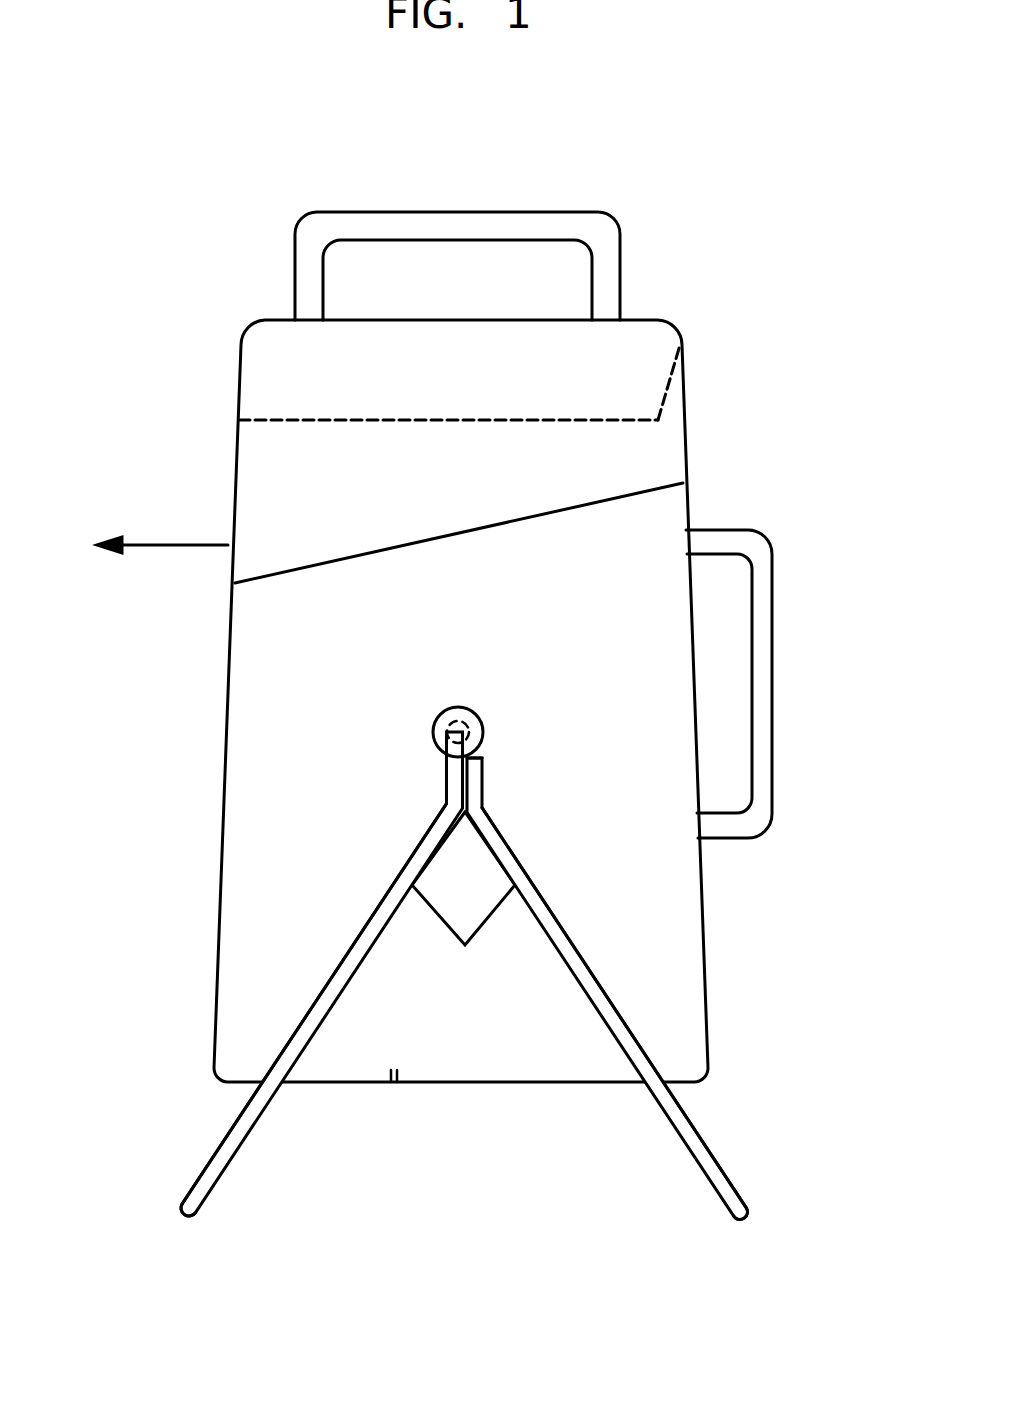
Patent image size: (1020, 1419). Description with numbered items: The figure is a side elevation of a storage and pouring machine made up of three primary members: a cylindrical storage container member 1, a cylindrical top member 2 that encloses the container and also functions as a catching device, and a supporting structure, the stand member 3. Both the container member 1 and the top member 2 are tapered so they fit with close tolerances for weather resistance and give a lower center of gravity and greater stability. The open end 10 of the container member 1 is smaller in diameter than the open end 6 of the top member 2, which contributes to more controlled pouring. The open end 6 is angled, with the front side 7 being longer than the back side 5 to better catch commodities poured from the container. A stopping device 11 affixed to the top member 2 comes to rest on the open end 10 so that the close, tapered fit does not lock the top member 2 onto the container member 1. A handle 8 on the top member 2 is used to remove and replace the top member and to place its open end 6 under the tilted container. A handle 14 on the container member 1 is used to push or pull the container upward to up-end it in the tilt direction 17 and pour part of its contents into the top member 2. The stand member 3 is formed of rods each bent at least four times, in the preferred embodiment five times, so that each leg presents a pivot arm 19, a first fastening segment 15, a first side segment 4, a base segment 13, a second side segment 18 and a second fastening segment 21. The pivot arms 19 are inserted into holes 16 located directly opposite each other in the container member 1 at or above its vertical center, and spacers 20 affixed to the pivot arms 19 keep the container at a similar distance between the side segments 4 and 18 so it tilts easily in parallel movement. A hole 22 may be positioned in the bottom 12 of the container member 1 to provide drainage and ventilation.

The cylindrical storage container member 1 is at (290, 612).
The cylindrical top member 2 is at (590, 368).
The stand member 3 is at (465, 945).
The first side segment 4 is at (218, 1180).
The back side 5 is at (684, 437).
The open end 6 is at (470, 530).
The front side 7 is at (236, 468).
The handle 8 is at (620, 275).
The open end 10 is at (352, 420).
The stopping device 11 is at (672, 385).
The bottom 12 is at (550, 1085).
The base segment 13 is at (178, 1208).
The handle 14 is at (772, 583).
The first fastening segment 15 is at (446, 783).
The holes 16 is at (462, 724).
The tilt direction 17 is at (135, 546).
The second side segment 18 is at (672, 1130).
The pivot arm 19 is at (442, 727).
The spacers 20 is at (480, 720).
The second fastening segment 21 is at (484, 780).
The hole 22 is at (392, 1085).